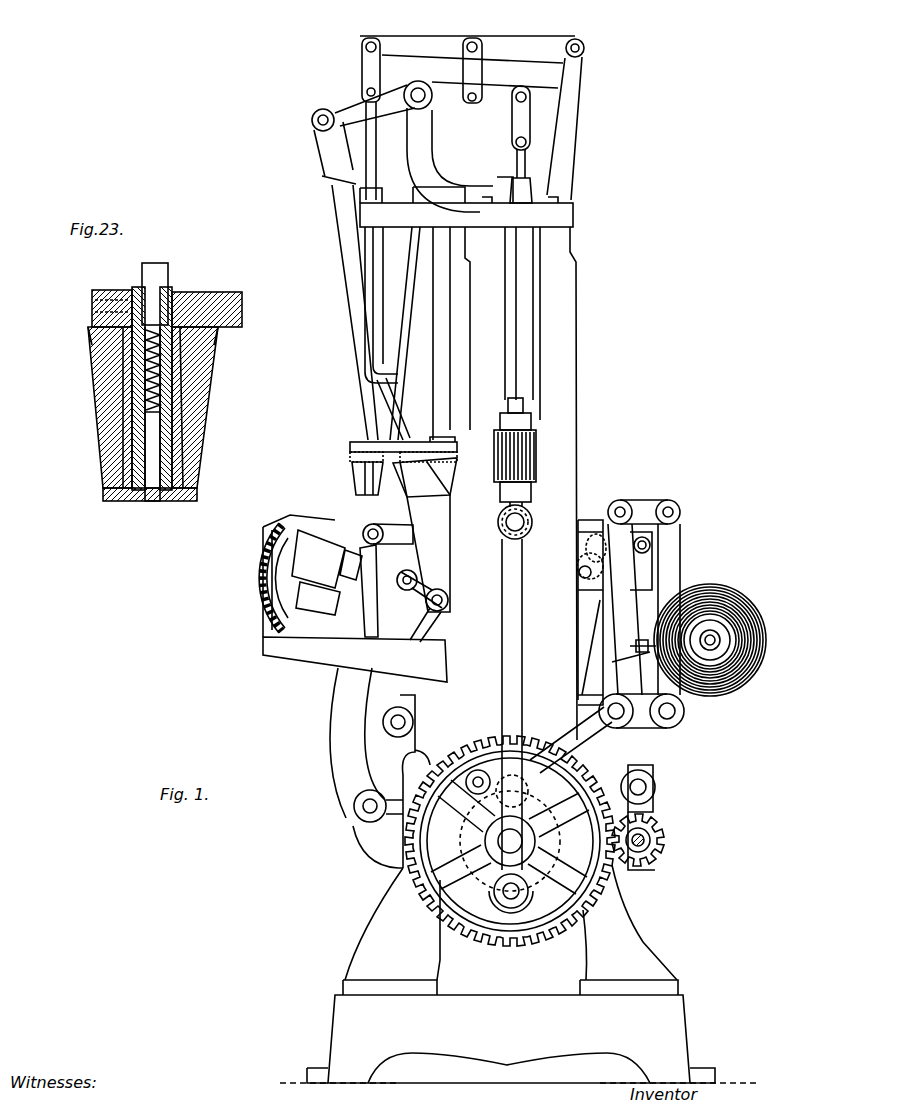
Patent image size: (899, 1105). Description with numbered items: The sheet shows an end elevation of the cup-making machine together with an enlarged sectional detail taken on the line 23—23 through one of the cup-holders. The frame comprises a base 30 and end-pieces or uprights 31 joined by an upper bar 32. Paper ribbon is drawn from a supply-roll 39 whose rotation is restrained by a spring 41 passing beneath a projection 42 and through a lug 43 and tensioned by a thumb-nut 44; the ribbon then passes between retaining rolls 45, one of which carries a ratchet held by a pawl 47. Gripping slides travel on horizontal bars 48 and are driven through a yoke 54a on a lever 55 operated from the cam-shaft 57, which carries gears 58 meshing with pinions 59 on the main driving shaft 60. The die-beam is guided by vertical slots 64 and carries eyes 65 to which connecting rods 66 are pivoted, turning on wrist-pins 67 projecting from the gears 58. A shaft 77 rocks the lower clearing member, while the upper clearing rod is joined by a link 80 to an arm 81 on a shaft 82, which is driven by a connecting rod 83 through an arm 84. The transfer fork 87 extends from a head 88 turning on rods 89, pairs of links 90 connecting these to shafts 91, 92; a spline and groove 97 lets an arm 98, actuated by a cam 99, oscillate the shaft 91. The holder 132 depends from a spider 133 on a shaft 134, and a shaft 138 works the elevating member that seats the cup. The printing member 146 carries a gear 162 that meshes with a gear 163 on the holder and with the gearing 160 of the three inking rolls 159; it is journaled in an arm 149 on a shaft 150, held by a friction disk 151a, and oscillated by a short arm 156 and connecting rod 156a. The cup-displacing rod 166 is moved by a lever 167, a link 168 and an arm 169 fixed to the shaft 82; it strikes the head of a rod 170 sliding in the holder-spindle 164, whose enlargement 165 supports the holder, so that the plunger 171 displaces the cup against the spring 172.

In FIG. 1, the base 30 is at (690, 1018).
In FIG. 1, the end-pieces or uprights 31 is at (580, 398).
In FIG. 1, the upper bar 32 is at (575, 215).
In FIG. 1, the supply-roll 39 is at (725, 652).
In FIG. 1, the spring 41 is at (642, 635).
In FIG. 1, the projection 42 is at (688, 612).
In FIG. 1, the lug 43 is at (632, 666).
In FIG. 1, the thumb-nut 44 is at (628, 655).
In FIG. 1, the retaining rolls 45 is at (588, 532).
In FIG. 1, the pawl 47 is at (580, 573).
In FIG. 1, the horizontal bars 48 is at (580, 562).
In FIG. 1, the yoke 54a is at (330, 520).
In FIG. 1, the lever 55 is at (340, 775).
In FIG. 1, the cam-shaft 57 is at (420, 868).
In FIG. 1, the gears 58 is at (513, 946).
In FIG. 1, the pinions 59 is at (662, 834).
In FIG. 1, the main driving shaft 60 is at (660, 850).
In FIG. 1, the vertical slots 64 is at (516, 325).
In FIG. 1, the eyes 65 is at (525, 505).
In FIG. 1, the connecting rods 66 is at (502, 712).
In FIG. 1, the wrist-pins 67 is at (522, 895).
In FIG. 1, the shaft 77 is at (388, 730).
In FIG. 1, the link 80 is at (524, 125).
In FIG. 1, the arm 81 is at (520, 90).
In FIG. 1, the shaft 82 is at (408, 92).
In FIG. 1, the connecting rod 83 is at (345, 245).
In FIG. 1, the arm 84 is at (332, 112).
In FIG. 1, the fork 87 is at (592, 518).
In FIG. 1, the head 88 is at (680, 508).
In FIG. 1, the horizontal rods or shafts 89 is at (628, 506).
In FIG. 1, the links 90 is at (628, 590).
In FIG. 1, the shaft 91 is at (645, 722).
In FIG. 1, the shaft 92 is at (665, 722).
In FIG. 1, the spline and groove 97 is at (612, 712).
In FIG. 1, the arm 98 is at (571, 740).
In FIG. 1, the cam 99 is at (545, 843).
In FIG. 1, the holder 132 is at (395, 375).
In FIG. 1, the spider 133 is at (450, 445).
In FIG. 1, the shaft 134 is at (395, 428).
In FIG. 1, the shaft 138 is at (648, 790).
In FIG. 1, the printing member 146 is at (445, 515).
In FIG. 1, the oscillating arm 149 is at (392, 546).
In FIG. 1, the shaft 150 is at (437, 592).
In FIG. 1, the disk 151a is at (400, 606).
In FIG. 1, the short arm 156 is at (410, 619).
In FIG. 1, the connecting rod 156a is at (440, 645).
In FIG. 1, the inking rolls 159 is at (305, 600).
In FIG. 1, the gearing 160 is at (280, 558).
In FIG. 1, the gear 162 is at (400, 468).
In FIG. 23, the gear 163 is at (92, 345).
In FIG. 1, the gear 163 is at (372, 462).
In FIG. 23, the head 164 is at (175, 292).
In FIG. 23, the enlargement 165 is at (108, 490).
In FIG. 1, the rod 166 is at (363, 350).
In FIG. 1, the lever 167 is at (392, 42).
In FIG. 1, the link 168 is at (465, 62).
In FIG. 1, the arm 169 is at (430, 105).
In FIG. 23, the rod 170 is at (168, 270).
In FIG. 1, the rod 170 is at (365, 442).
In FIG. 23, the plunger 171 is at (128, 505).
In FIG. 23, the spring 172 is at (165, 410).
In FIG. 1, the rod 23 is at (385, 395).